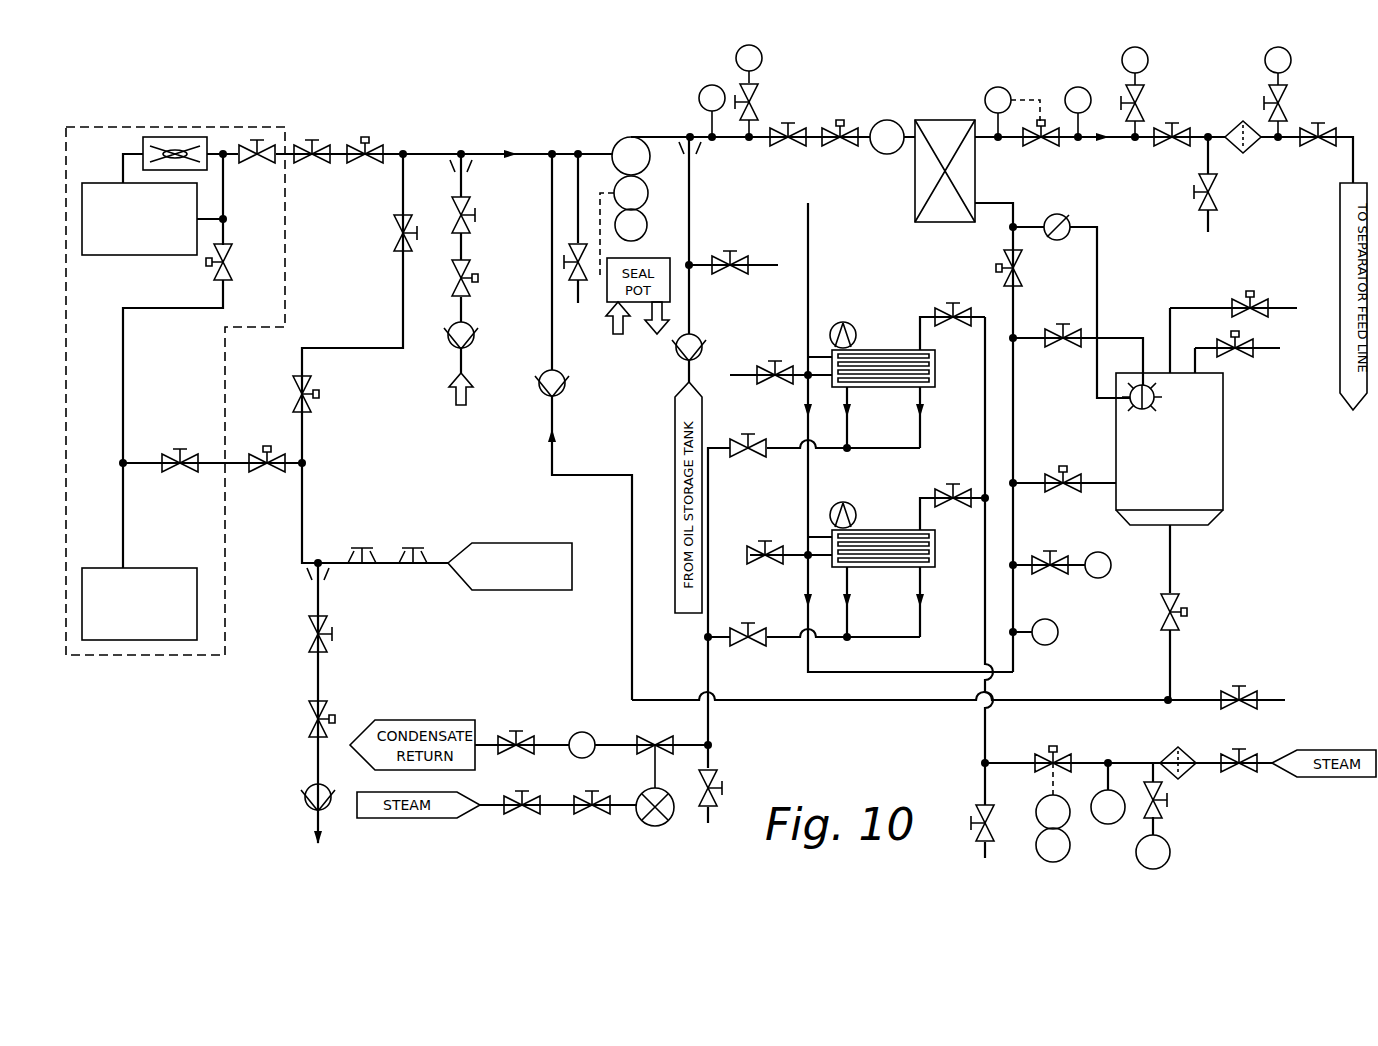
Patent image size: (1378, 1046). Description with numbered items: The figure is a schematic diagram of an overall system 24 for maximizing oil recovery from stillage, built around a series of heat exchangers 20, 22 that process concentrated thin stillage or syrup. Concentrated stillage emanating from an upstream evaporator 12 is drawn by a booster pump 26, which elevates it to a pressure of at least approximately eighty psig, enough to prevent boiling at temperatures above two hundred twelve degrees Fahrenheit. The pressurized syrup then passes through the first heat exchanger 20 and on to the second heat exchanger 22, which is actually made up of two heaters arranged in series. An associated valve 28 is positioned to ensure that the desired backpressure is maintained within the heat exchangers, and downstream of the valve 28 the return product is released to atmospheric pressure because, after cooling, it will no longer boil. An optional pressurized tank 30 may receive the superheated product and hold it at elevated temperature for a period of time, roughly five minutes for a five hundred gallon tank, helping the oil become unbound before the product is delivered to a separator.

The evaporator 12 is at (243, 127).
The first heat exchanger 20 is at (942, 120).
The second heat exchanger 22 is at (880, 350).
The system 24 is at (488, 625).
The booster pump 26 is at (612, 142).
The valve 28 is at (1046, 128).
The pressurized tank 30 is at (1223, 448).